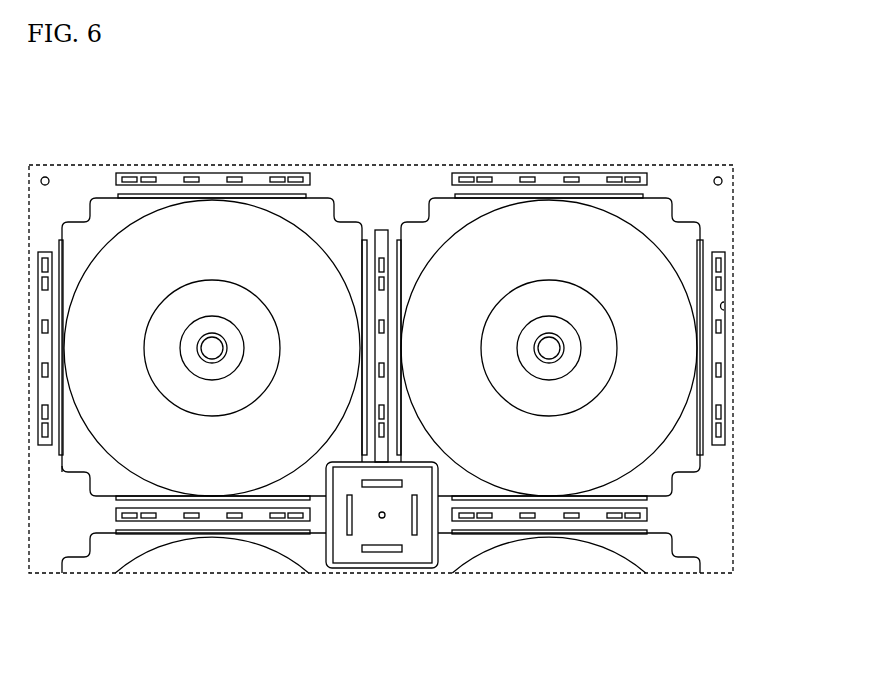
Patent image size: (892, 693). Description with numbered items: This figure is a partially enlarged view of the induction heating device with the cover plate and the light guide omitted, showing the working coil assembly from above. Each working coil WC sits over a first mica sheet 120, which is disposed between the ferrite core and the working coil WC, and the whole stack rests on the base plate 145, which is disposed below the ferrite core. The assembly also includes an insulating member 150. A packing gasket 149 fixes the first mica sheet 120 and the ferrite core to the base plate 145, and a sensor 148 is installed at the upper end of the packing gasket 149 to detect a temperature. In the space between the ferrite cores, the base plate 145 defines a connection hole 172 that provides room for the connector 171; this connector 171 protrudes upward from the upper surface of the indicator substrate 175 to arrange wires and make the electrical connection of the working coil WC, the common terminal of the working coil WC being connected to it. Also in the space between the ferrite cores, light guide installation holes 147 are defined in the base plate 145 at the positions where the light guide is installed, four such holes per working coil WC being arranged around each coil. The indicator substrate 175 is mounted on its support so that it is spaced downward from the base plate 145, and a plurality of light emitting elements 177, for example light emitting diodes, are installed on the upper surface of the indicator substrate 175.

The first mica sheet 120 is at (657, 483).
The base plate 145 is at (381, 180).
The light guide installation hole 147 is at (724, 305).
The sensor 148 is at (565, 346).
The packing gasket 149 is at (567, 367).
The insulating member 150 is at (701, 246).
The connector 171 is at (382, 548).
The connection hole 172 is at (334, 533).
The indicator substrate 175 is at (503, 518).
The light emitting elements 177 is at (722, 268).
The working coil WC is at (615, 432).